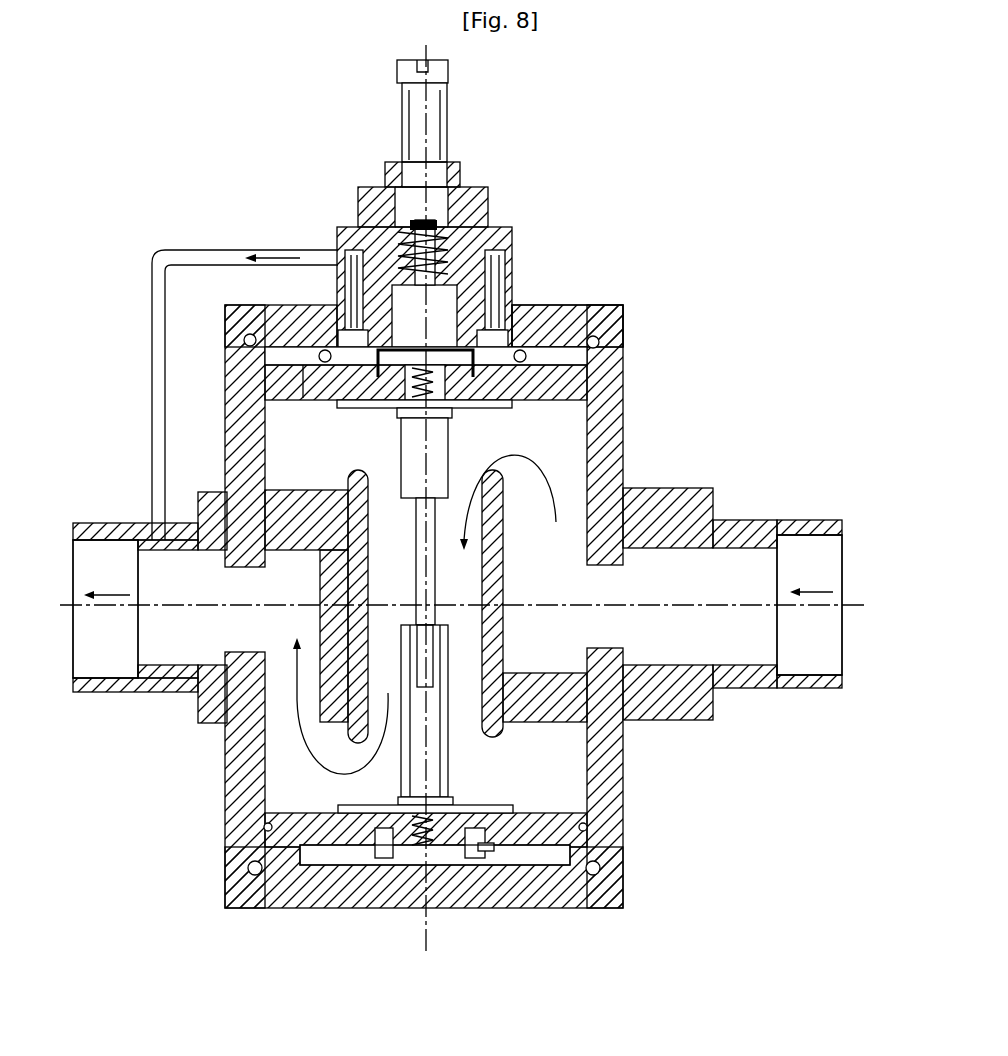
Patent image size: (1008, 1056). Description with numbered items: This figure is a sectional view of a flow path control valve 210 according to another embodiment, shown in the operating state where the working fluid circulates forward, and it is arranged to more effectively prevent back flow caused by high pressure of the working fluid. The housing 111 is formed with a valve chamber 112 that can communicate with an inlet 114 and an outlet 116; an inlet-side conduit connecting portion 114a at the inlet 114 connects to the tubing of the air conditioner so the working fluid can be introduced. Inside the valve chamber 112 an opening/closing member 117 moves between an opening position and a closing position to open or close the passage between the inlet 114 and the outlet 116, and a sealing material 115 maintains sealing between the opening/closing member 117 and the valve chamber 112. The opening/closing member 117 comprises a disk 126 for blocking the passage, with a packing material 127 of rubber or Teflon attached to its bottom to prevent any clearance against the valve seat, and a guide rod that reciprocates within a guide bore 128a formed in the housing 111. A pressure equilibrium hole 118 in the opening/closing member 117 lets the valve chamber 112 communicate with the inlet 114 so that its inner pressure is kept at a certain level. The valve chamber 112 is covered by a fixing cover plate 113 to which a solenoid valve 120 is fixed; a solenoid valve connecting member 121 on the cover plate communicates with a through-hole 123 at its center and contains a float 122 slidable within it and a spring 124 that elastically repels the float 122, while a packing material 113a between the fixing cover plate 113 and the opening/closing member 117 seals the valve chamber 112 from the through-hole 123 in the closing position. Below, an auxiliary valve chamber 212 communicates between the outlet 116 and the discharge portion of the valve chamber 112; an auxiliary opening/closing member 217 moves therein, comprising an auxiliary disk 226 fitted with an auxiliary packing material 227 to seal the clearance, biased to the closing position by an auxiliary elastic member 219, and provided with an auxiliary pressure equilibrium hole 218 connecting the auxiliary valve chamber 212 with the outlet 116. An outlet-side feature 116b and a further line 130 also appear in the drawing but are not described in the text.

The housing 111 is at (605, 462).
The valve chamber 112 is at (558, 318).
The fixing cover plate 113 is at (624, 305).
The packing material 113a is at (300, 330).
The inlet 114 is at (697, 572).
The inlet-side conduit connecting portion 114a is at (751, 680).
The sealing material 115 is at (275, 380).
The outlet 116 is at (246, 584).
The outlet 116b is at (152, 690).
The opening/closing member 117 is at (710, 374).
The pressure equilibrium hole 118 is at (244, 341).
The solenoid valve 120 is at (476, 110).
The solenoid valve connecting member 121 is at (510, 248).
The float 122 is at (440, 216).
The through-hole 123 is at (362, 213).
The spring 124 is at (432, 222).
The disk 126 is at (583, 374).
The packing material 127 is at (512, 402).
The guide bore 128a is at (446, 768).
The feedback pipe 130 is at (158, 256).
The flow path control valve 210 is at (644, 323).
The auxiliary valve chamber 212 is at (590, 858).
The auxiliary opening/closing member 217 is at (363, 964).
The auxiliary pressure equilibrium hole 218 is at (264, 827).
The auxiliary elastic member 219 is at (480, 848).
The auxiliary disk 226 is at (332, 840).
The auxiliary packing material 227 is at (368, 820).